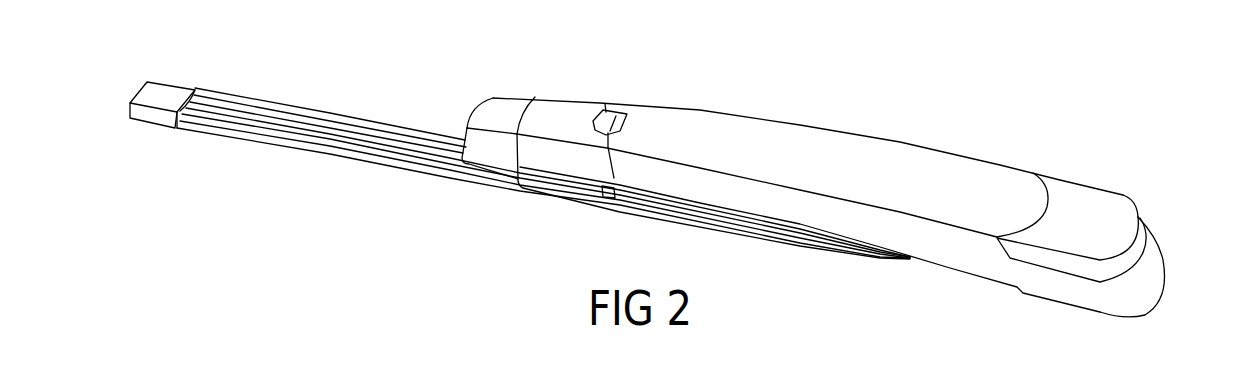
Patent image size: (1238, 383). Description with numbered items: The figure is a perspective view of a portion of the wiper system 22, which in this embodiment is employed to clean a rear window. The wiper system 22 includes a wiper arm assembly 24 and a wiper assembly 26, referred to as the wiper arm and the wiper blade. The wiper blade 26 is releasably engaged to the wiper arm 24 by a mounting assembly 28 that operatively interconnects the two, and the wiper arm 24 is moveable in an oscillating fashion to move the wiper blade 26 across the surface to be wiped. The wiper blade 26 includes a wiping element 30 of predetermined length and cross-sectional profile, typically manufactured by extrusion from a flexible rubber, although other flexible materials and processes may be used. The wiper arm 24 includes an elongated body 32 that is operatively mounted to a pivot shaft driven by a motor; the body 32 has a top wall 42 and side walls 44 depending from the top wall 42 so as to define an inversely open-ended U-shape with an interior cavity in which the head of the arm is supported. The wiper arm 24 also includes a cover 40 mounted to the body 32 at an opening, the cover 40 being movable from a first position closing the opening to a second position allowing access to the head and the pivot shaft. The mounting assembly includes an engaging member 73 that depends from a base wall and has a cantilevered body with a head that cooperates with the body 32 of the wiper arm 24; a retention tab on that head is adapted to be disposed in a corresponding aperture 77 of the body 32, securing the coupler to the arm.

The wiper system 22 is at (667, 75).
The wiper arm assembly 24 is at (867, 133).
The wiper assembly 26 is at (267, 102).
The mounting assembly 28 is at (507, 97).
The wiping element 30 is at (321, 153).
The elongated body 32 is at (727, 113).
The cover 40 is at (1117, 192).
The top wall 42 is at (942, 167).
The side walls 44 is at (937, 245).
The engaging member 73 is at (603, 108).
The aperture 77 is at (614, 178).